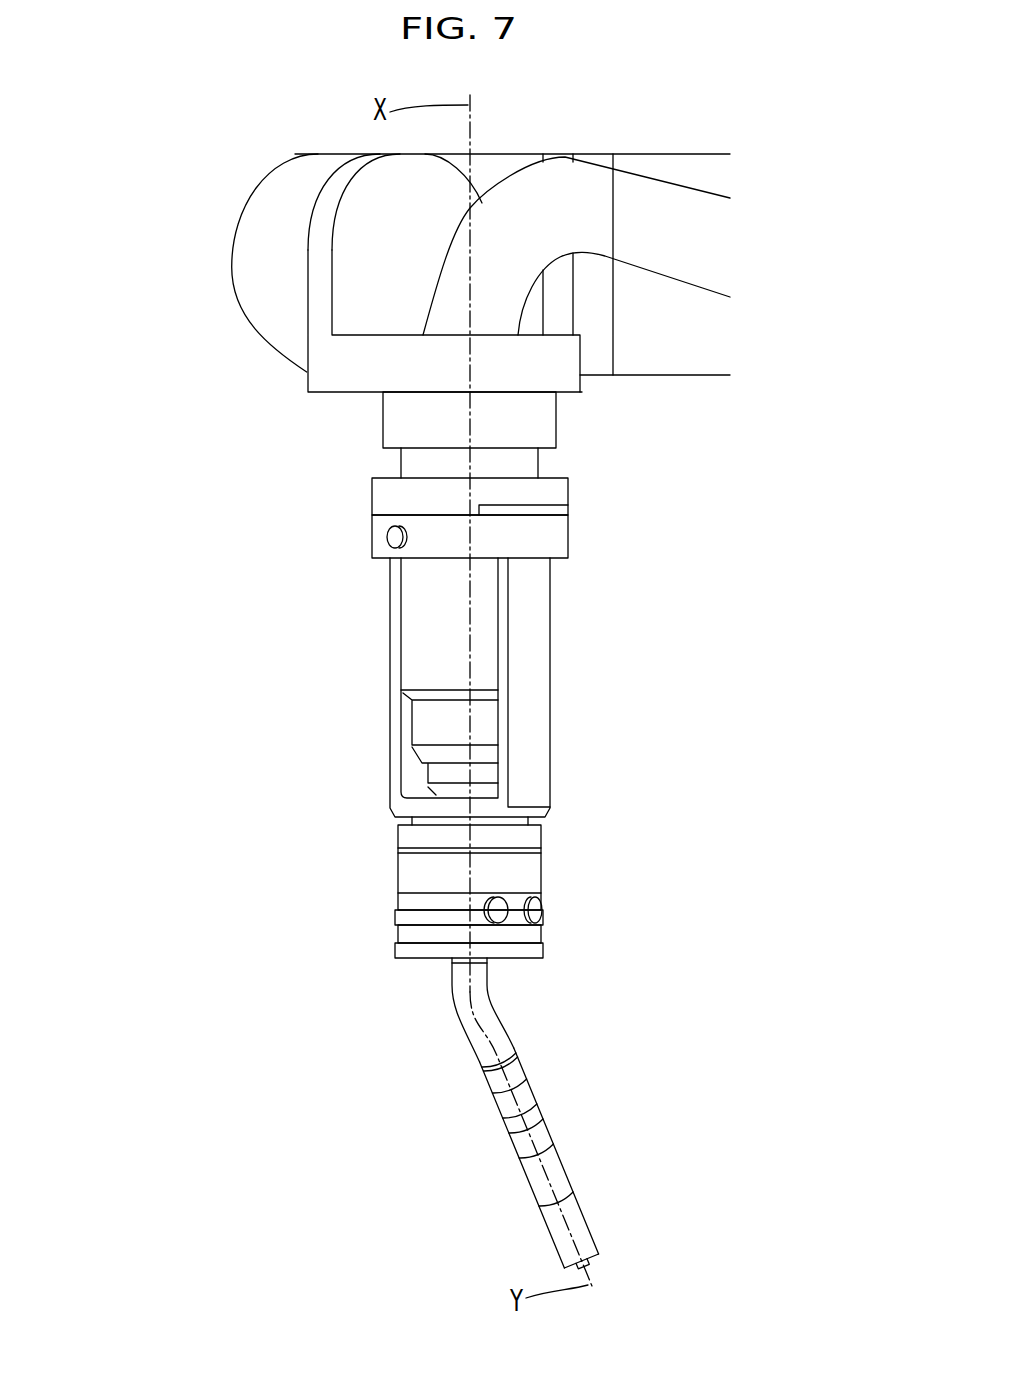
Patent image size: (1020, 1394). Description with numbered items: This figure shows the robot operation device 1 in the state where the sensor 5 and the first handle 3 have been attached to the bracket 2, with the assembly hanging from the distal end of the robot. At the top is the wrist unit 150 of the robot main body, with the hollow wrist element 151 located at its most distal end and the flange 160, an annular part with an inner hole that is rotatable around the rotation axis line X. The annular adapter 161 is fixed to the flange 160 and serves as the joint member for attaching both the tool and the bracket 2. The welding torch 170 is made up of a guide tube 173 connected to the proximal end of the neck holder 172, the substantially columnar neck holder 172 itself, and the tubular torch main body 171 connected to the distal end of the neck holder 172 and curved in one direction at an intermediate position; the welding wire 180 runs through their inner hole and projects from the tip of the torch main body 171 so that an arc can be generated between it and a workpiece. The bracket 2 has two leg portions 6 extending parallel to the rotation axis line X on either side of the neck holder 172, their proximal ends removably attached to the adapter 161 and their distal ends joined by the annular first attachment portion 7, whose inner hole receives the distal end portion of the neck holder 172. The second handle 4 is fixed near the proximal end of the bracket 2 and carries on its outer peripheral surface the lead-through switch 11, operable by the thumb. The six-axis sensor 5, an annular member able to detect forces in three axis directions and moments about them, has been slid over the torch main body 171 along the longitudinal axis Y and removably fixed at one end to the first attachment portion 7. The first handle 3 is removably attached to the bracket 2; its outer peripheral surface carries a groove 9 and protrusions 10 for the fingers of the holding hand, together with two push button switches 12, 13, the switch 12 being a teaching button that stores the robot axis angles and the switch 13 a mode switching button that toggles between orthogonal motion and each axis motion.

The robot operation device 1 is at (433, 880).
The bracket 2 is at (392, 665).
The first handle 3 is at (474, 911).
The second handle 4 is at (372, 538).
The sensor 5 is at (398, 866).
The leg portions 6 is at (395, 747).
The first attachment portion 7 is at (398, 840).
The groove 9 is at (541, 935).
The protrusions 10 is at (543, 948).
The lead-through switch 11 is at (393, 542).
The push button switch 12 is at (498, 908).
The push button switch 13 is at (538, 908).
The wrist unit 150 is at (245, 212).
The hollow wrist element 151 is at (582, 387).
The flange 160 is at (382, 427).
The adapter 161 is at (372, 497).
The welding torch 170 is at (517, 1120).
The torch main body 171 is at (457, 1012).
The neck holder 172 is at (480, 600).
The guide tube 173 is at (522, 190).
The welding wire 180 is at (590, 1270).